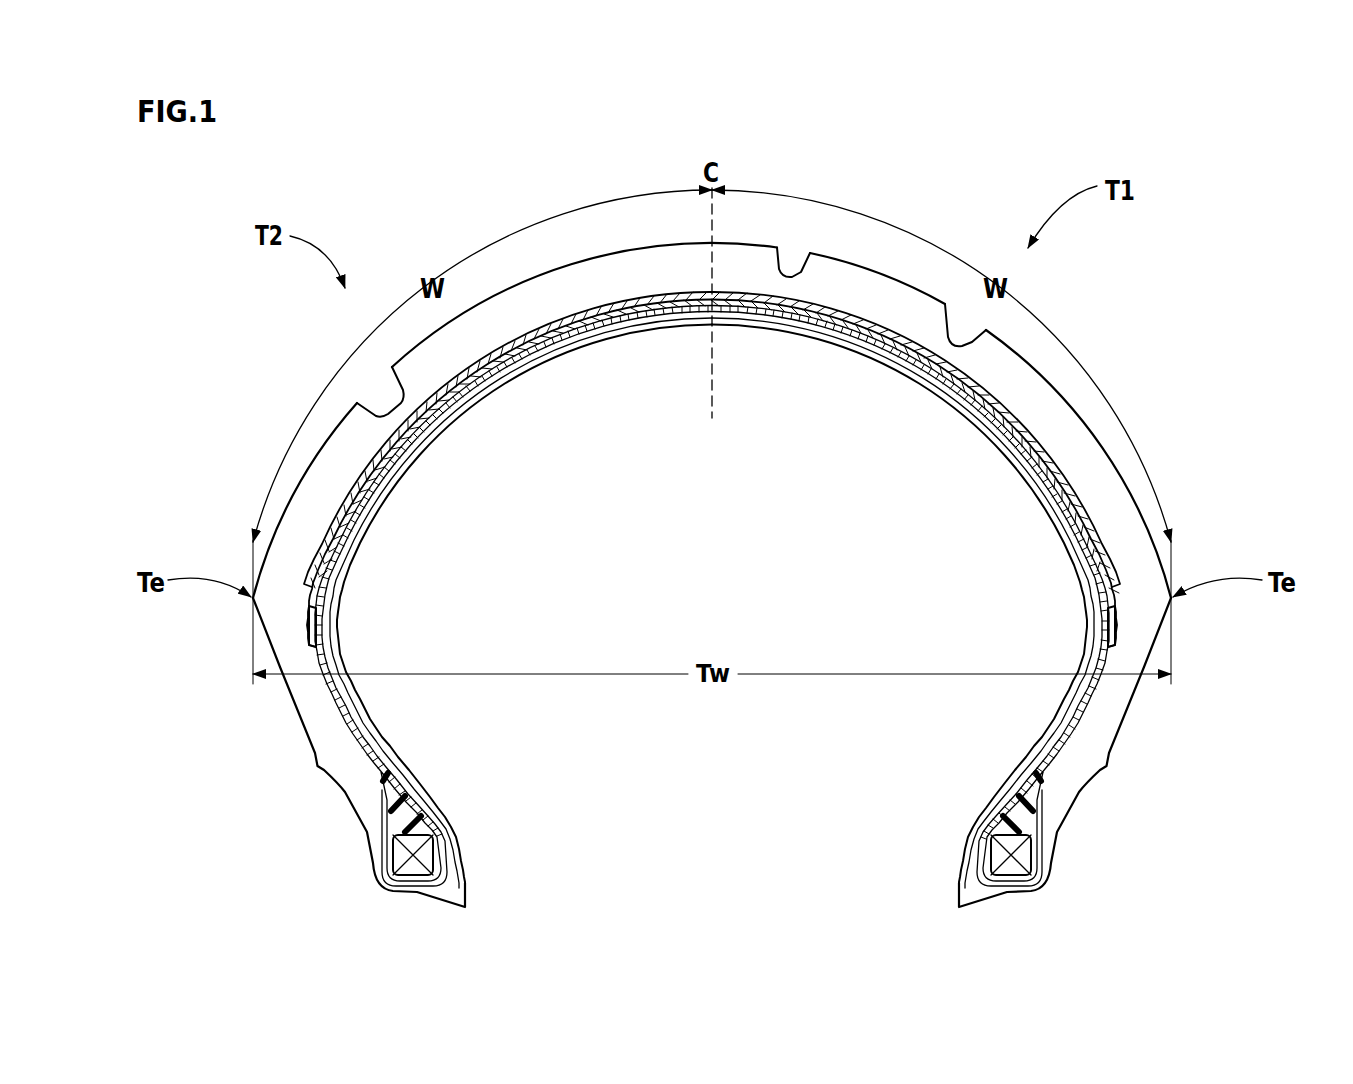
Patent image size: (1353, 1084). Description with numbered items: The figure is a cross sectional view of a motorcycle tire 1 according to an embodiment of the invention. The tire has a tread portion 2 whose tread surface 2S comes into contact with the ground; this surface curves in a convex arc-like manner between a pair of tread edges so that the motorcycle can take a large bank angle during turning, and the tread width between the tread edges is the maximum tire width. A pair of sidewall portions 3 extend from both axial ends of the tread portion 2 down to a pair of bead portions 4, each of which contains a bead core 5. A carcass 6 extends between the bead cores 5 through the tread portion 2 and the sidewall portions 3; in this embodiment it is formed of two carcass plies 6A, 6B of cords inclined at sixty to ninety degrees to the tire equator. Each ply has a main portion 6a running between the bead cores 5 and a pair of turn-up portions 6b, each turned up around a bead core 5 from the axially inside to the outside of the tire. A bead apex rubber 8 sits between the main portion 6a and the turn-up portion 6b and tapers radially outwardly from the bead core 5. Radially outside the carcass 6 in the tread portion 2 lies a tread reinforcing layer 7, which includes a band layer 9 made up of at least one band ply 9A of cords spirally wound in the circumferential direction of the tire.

The motorcycle tire 1 is at (1150, 405).
The tread portion 2 is at (1042, 374).
The tread surface 2S is at (712, 420).
The sidewall portions 3 is at (1150, 702).
The bead portion 4 is at (1072, 845).
The bead core 5 is at (1000, 853).
The carcass 6 is at (937, 514).
The carcass ply 6A is at (1087, 531).
The carcass ply 6B is at (1093, 569).
The main portion 6a is at (1047, 751).
The turn-up portion 6b is at (1058, 776).
The tread reinforcing layer 7 is at (859, 322).
The bead apex rubber 8 is at (1018, 818).
The band layer 9 is at (762, 301).
The band ply 9A is at (521, 603).